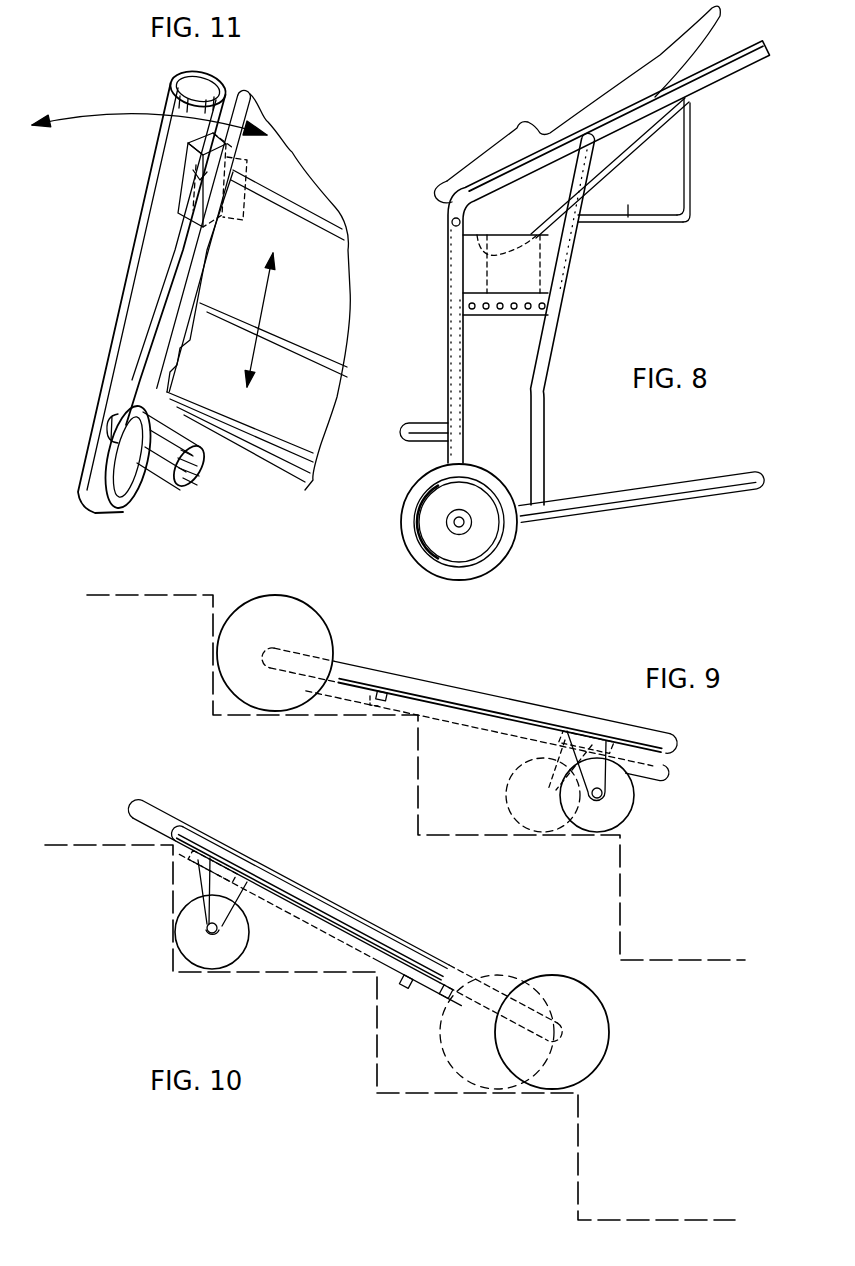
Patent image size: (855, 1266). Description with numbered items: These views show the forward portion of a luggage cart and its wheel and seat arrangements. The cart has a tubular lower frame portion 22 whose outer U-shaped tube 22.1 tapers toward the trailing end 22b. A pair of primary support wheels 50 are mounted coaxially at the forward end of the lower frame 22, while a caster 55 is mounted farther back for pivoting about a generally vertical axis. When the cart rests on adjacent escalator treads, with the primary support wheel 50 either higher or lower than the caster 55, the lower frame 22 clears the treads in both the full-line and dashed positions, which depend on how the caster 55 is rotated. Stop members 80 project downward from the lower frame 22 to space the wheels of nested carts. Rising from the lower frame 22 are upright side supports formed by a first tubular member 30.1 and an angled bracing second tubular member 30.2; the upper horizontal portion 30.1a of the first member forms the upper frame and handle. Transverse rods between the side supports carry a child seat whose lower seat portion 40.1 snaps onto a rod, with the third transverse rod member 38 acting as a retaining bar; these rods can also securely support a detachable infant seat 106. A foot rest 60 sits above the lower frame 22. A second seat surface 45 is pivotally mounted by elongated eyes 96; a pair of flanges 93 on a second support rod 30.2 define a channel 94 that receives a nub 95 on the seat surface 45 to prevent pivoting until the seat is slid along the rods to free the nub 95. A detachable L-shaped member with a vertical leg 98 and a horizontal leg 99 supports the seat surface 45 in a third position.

In FIG. 8, the infant seat 106 is at (648, 74).
In FIG. 8, the upper frame portion 30.1a is at (733, 70).
In FIG. 8, the first tubular member of upright side support 30.1 is at (457, 357).
In FIG. 11, the second tubular member of upright side support 30.2 is at (140, 268).
In FIG. 8, the second tubular member of upright side support 30.2 is at (546, 356).
In FIG. 8, the vertical leg 98 is at (688, 163).
In FIG. 8, the horizontal leg 99 is at (641, 222).
In FIG. 11, the second seat support surface 45 is at (320, 322).
In FIG. 8, the second seat support surface 45 is at (631, 200).
In FIG. 8, the third transverse rod member 38 is at (452, 228).
In FIG. 8, the lower child seat portion 40.1 is at (515, 312).
In FIG. 8, the foot rest 60 is at (410, 440).
In FIG. 8, the primary support wheel 50 is at (408, 530).
In FIG. 9, the primary support wheel 50 is at (307, 622).
In FIG. 10, the primary support wheel 50 is at (598, 1022).
In FIG. 8, the lower frame portion 22 is at (652, 505).
In FIG. 9, the outer U-shaped tube 22.1 is at (525, 705).
In FIG. 10, the outer U-shaped tube 22.1 is at (383, 937).
In FIG. 9, the trailing end 22b is at (690, 718).
In FIG. 10, the trailing end 22b is at (182, 822).
In FIG. 9, the caster 55 is at (628, 812).
In FIG. 10, the caster 55 is at (240, 945).
In FIG. 9, the stop member 80 is at (383, 703).
In FIG. 10, the stop member 80 is at (437, 998).
In FIG. 11, the flange 93 is at (247, 162).
In FIG. 11, the channel 94 is at (215, 140).
In FIG. 11, the nub 95 is at (186, 192).
In FIG. 11, the elongated eye 96 is at (128, 506).